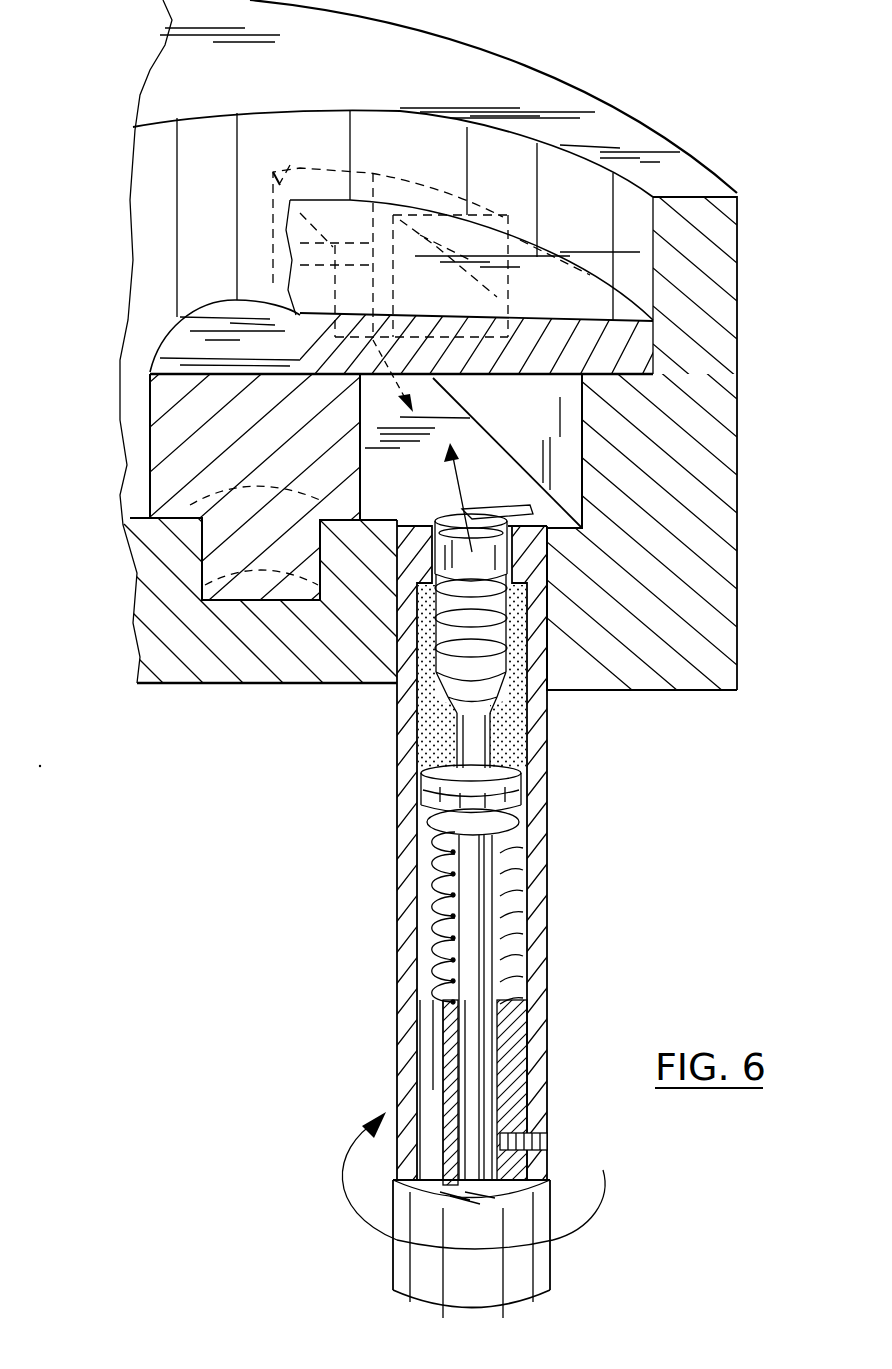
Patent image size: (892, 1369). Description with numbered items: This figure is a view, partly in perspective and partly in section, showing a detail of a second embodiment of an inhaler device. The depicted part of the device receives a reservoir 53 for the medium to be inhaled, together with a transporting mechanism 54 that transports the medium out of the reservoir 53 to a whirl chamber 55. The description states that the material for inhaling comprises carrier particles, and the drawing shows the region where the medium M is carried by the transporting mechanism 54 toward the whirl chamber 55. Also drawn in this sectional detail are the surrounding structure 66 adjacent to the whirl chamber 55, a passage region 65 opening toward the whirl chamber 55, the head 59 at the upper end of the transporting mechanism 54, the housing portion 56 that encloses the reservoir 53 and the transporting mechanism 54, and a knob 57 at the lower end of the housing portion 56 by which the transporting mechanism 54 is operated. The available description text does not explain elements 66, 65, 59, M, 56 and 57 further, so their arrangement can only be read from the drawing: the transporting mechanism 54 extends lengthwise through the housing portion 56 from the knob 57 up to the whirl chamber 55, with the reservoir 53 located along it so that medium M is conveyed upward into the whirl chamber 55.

The bearing block 66 is at (150, 416).
The whirl chamber 55 is at (417, 413).
The passage 65 is at (517, 374).
The screw head 59 is at (500, 518).
The transporting mechanism 54 is at (433, 690).
The stippled material M is at (428, 727).
The tubular housing 56 is at (565, 690).
The reservoir 53 is at (505, 737).
The knob 57 is at (548, 1280).